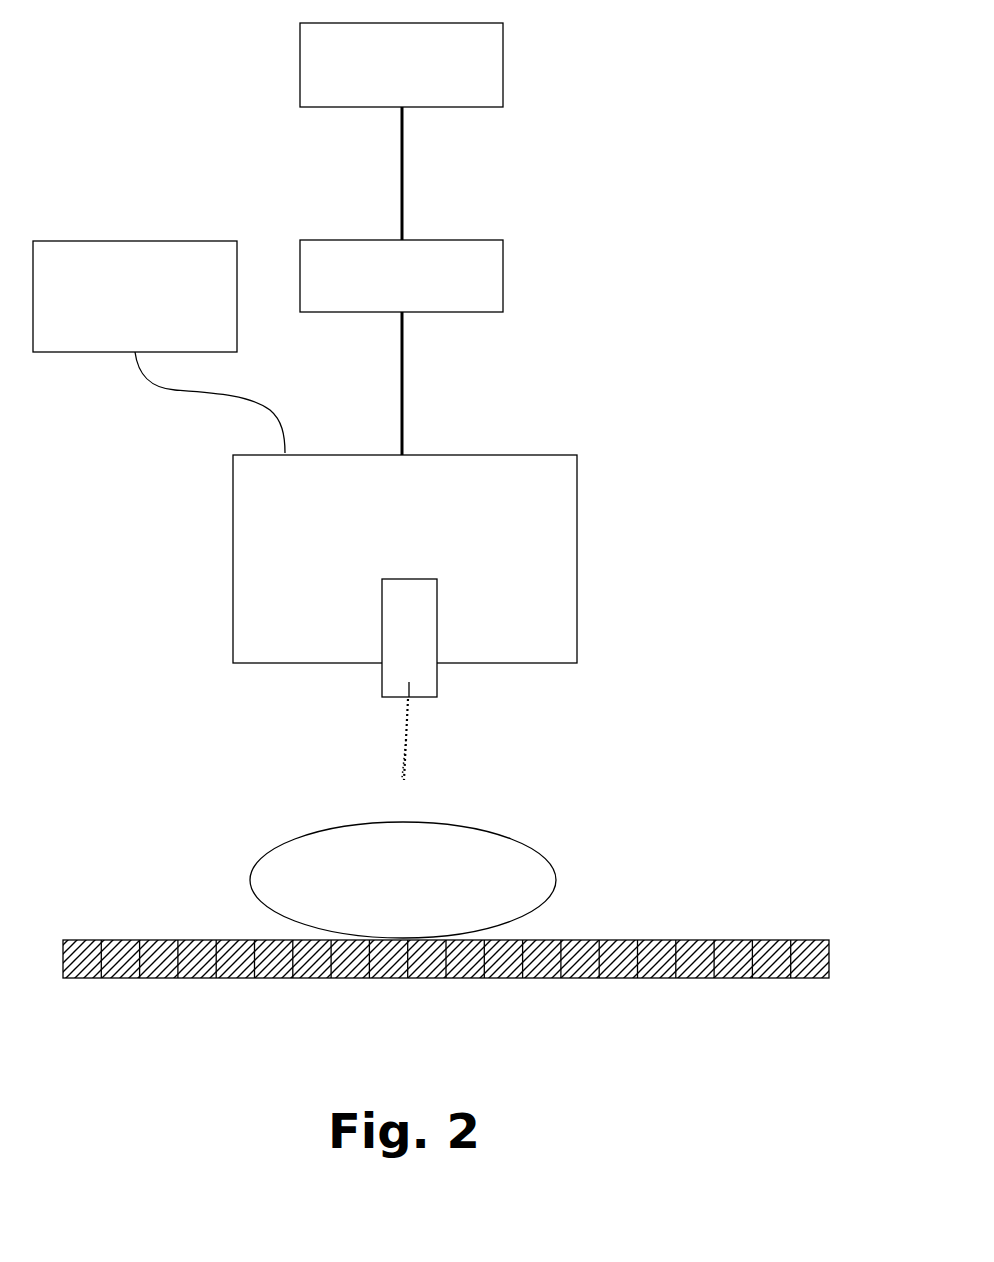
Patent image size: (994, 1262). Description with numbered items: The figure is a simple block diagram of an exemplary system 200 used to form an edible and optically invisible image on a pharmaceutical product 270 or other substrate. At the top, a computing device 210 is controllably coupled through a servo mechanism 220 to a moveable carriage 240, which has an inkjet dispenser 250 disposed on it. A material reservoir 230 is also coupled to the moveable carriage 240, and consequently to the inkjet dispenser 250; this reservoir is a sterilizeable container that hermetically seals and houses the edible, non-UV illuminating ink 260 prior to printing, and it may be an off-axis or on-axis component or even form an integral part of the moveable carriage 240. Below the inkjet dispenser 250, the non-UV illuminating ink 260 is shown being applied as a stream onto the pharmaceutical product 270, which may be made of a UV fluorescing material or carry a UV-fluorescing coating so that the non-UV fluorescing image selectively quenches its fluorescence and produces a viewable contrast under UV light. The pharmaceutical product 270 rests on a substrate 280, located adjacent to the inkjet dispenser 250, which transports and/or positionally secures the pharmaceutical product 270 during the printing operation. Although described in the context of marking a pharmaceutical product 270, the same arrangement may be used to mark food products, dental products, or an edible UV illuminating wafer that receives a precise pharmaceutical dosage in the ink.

The system 200 is at (733, 186).
The computing device 210 is at (505, 62).
The servo mechanism 220 is at (505, 274).
The material reservoir 230 is at (116, 333).
The moveable carriage 240 is at (384, 503).
The inkjet dispenser 250 is at (437, 610).
The non-UV illuminating ink 260 is at (412, 730).
The pharmaceutical product 270 is at (525, 842).
The substrate 280 is at (575, 986).